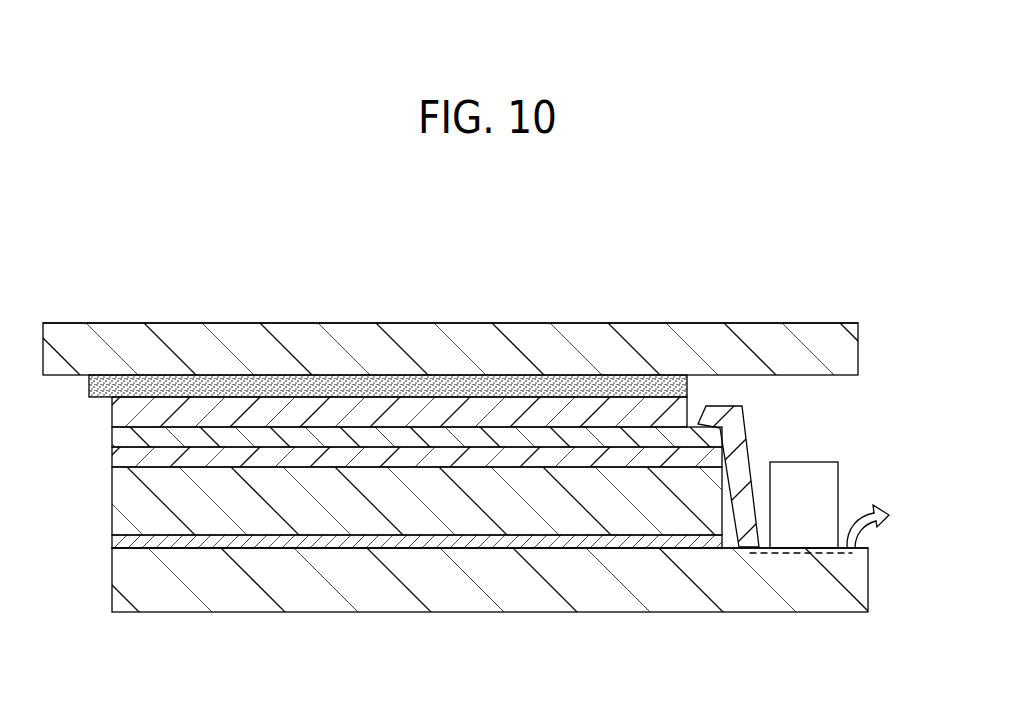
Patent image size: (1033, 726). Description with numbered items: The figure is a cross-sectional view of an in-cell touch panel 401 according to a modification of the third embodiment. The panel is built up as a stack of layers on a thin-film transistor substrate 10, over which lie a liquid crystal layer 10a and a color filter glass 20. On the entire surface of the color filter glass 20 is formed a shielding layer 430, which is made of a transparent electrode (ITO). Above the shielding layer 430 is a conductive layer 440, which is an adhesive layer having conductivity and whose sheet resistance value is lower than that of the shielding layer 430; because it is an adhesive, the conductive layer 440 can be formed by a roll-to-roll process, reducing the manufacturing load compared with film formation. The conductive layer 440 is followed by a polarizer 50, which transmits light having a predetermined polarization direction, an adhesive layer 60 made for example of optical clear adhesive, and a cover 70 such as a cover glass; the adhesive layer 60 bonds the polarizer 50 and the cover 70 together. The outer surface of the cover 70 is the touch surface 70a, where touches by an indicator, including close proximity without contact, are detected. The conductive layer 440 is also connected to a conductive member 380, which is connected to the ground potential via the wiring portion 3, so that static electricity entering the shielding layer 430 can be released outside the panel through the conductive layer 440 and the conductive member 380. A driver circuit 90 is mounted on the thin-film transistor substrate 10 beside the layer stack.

The in-cell touch panel 401 is at (102, 178).
The thin-film transistor substrate 10 is at (593, 567).
The liquid crystal layer 10a is at (483, 548).
The color filter glass 20 is at (396, 500).
The shielding layer 430 is at (265, 453).
The conductive layer 440 is at (413, 432).
The polarizer 50 is at (310, 415).
The adhesive layer 60 is at (168, 385).
The cover 70 is at (260, 323).
The touch surface 70a is at (496, 323).
The conductive member 380 is at (757, 470).
The driver circuit 90 is at (800, 462).
The wiring portion 3 is at (870, 507).